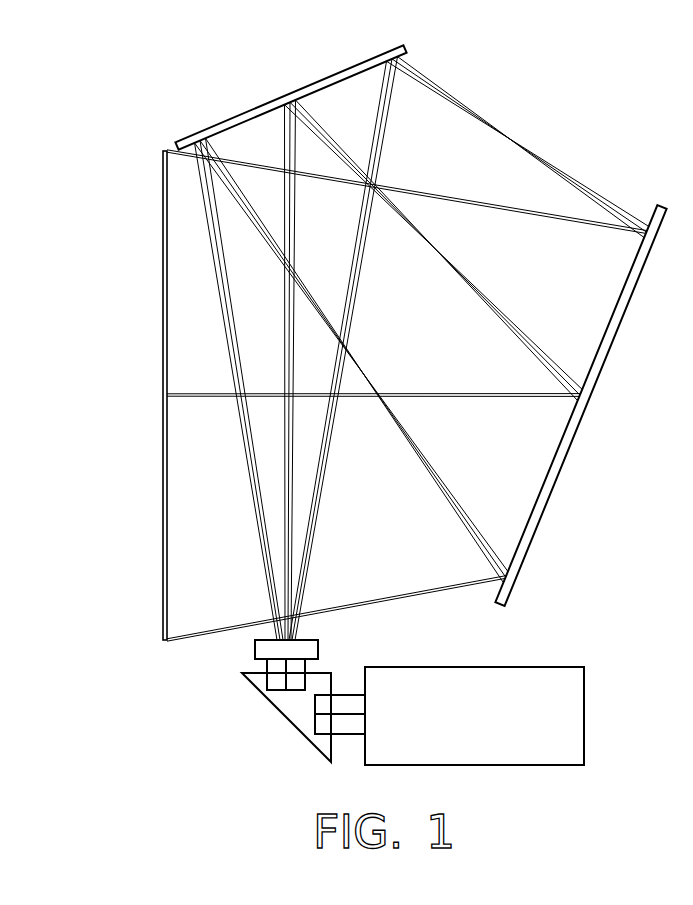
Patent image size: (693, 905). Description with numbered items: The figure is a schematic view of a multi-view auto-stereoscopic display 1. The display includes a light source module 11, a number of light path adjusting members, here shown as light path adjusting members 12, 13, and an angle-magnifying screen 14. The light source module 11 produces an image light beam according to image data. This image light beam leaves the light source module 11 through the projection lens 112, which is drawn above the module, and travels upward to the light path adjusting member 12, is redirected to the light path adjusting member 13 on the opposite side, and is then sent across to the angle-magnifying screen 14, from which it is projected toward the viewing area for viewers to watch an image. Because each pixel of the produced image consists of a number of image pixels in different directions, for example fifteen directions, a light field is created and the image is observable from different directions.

The multi-view auto-stereoscopic display 1 is at (598, 62).
The light source module 11 is at (599, 651).
The projection lens 112 is at (265, 649).
The light path adjusting member 12 is at (291, 93).
The light path adjusting member 13 is at (586, 406).
The angle-magnifying screen 14 is at (163, 273).